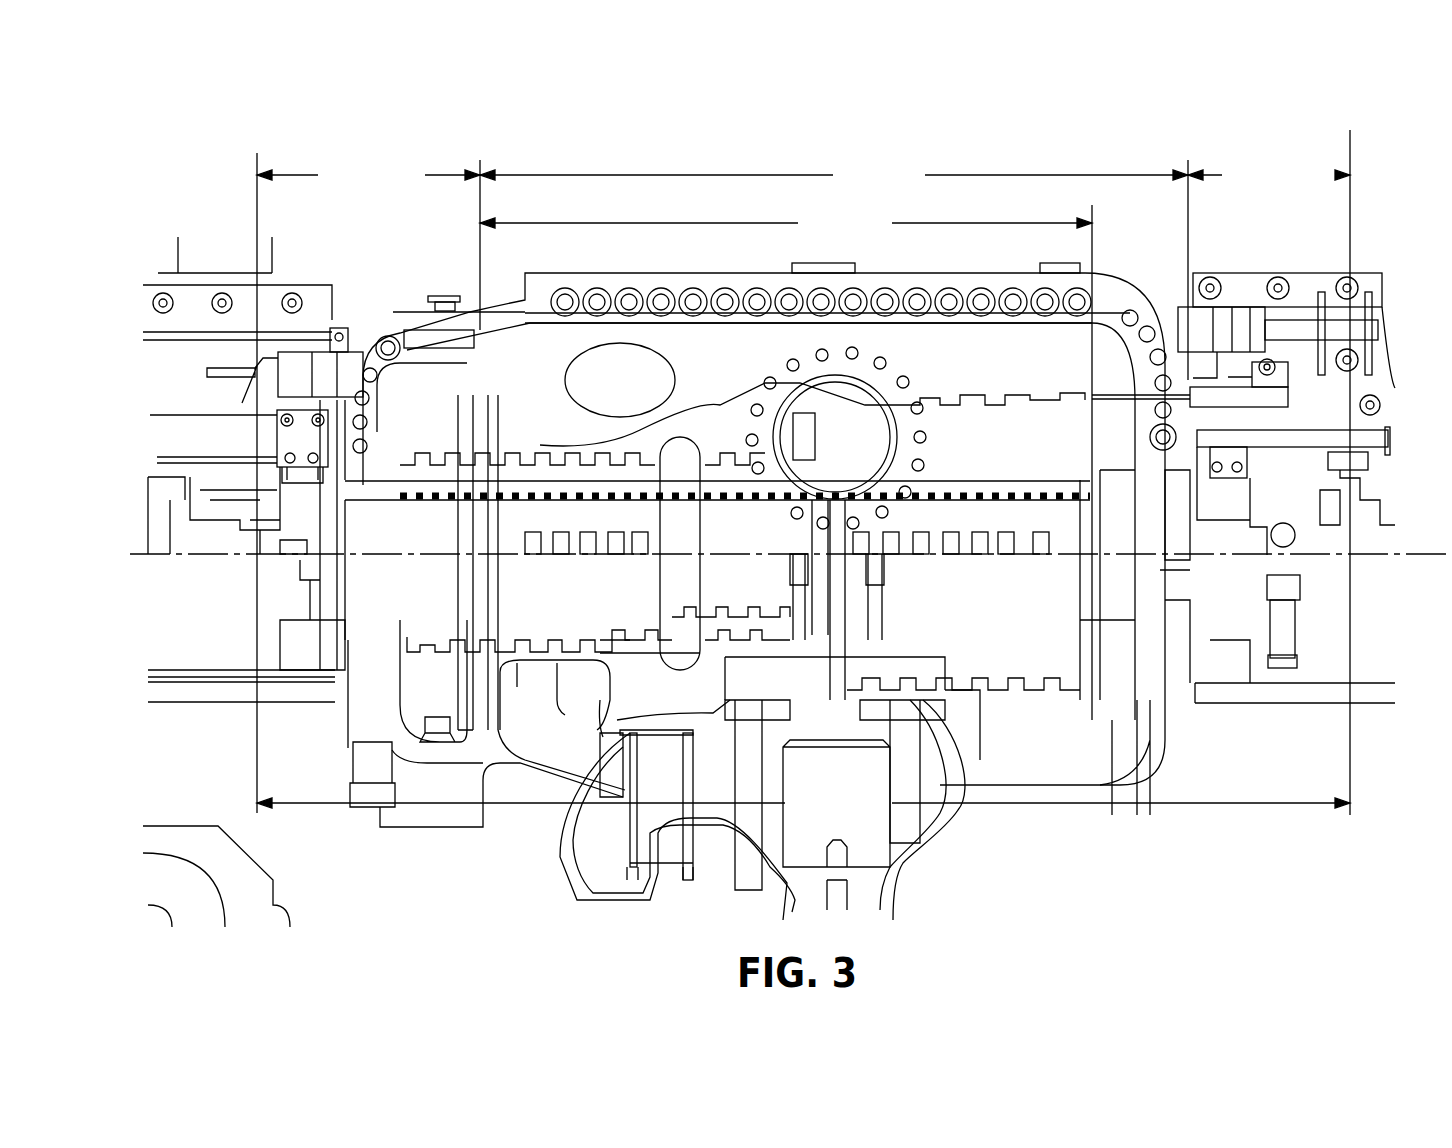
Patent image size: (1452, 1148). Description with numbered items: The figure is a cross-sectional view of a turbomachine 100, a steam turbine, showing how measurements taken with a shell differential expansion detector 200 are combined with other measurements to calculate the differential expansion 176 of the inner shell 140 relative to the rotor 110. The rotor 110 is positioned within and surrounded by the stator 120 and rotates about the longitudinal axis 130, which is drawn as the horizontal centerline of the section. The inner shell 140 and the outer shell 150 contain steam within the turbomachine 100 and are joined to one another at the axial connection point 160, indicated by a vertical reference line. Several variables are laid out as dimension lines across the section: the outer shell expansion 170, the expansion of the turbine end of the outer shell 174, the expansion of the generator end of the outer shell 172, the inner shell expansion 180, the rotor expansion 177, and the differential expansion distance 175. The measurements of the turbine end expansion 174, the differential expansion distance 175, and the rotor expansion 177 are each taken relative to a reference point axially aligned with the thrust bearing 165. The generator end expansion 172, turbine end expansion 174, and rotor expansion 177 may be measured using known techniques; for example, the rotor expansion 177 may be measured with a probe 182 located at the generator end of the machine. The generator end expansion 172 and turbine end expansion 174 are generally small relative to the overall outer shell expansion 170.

The turbomachine 100 is at (1312, 848).
The rotor 110 is at (817, 537).
The stator 120 is at (642, 422).
The longitudinal axis 130 is at (166, 566).
The inner shell 140 is at (950, 408).
The outer shell 150 is at (602, 292).
The axial connection point 160 is at (490, 226).
The thrust bearing 165 is at (248, 543).
The outer shell expansion (ΔX_O) 170 is at (834, 177).
The expansion of the generator end of the outer shell (ΔX_OGE) 172 is at (1269, 177).
The expansion of the turbine end of the outer shell (ΔX_OTE) 174 is at (368, 177).
The differential expansion distance (DXD) 175 is at (803, 804).
The differential expansion 176 is at (1080, 540).
The rotor expansion (ΔX_R) 177 is at (338, 485).
The inner shell expansion (ΔX_I) 180 is at (786, 225).
The probe 182 is at (1372, 470).
The shell differential expansion detector 200 is at (1290, 394).